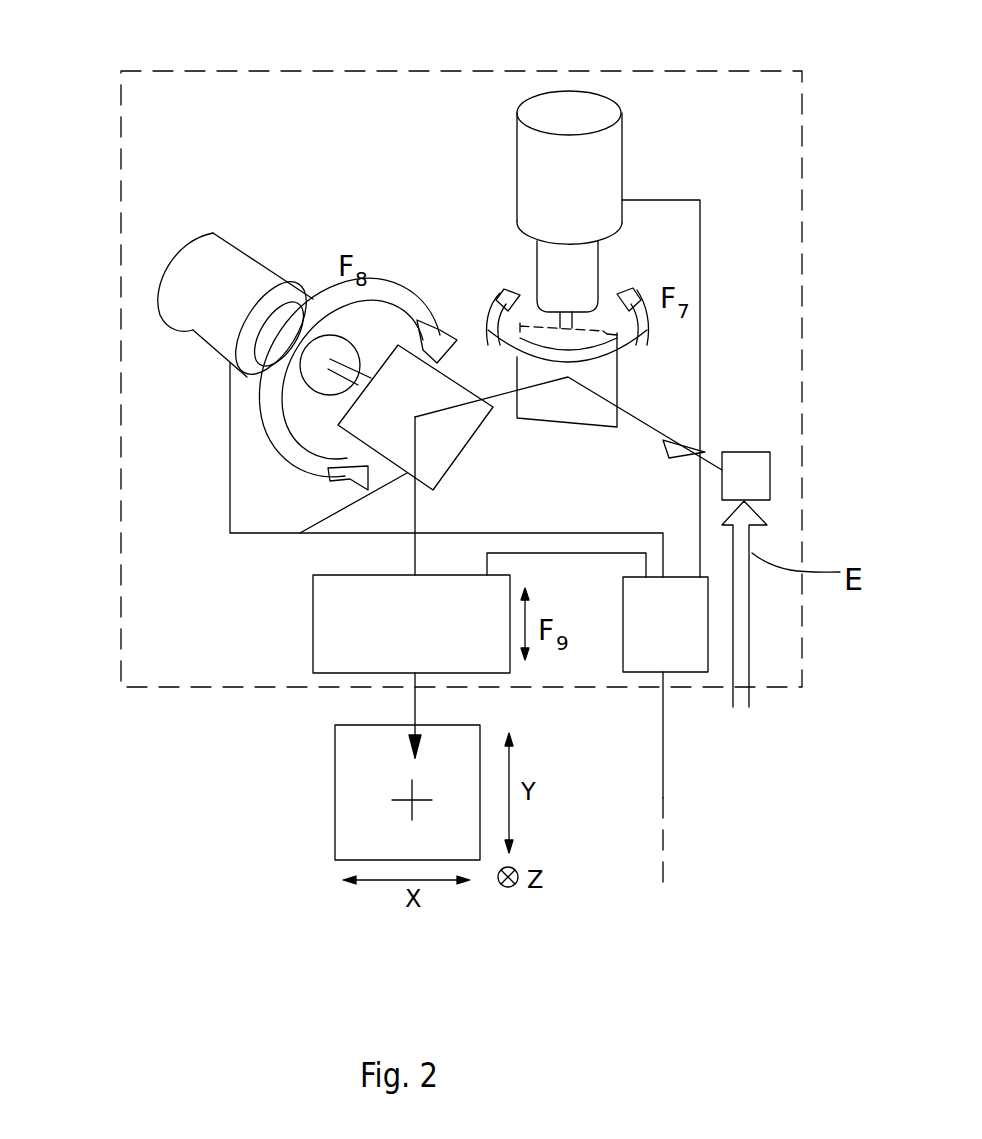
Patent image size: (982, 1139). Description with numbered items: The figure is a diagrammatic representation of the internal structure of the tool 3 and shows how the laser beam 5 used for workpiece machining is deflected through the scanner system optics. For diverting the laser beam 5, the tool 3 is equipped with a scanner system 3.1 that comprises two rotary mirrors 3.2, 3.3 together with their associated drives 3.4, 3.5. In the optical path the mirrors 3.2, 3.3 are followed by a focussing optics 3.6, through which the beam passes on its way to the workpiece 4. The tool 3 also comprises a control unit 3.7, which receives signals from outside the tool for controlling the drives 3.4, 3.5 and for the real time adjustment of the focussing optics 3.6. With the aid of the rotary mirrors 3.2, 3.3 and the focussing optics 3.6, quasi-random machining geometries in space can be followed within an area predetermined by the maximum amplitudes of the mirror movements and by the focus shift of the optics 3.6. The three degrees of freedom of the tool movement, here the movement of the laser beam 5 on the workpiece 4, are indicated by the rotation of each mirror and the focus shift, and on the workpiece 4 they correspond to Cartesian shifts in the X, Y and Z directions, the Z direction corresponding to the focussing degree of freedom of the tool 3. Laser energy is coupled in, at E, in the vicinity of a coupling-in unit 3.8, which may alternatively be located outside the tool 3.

The tool 3 is at (768, 695).
The scanner system 3.1 is at (427, 197).
The mirror 3.2 is at (617, 387).
The mirror 3.3 is at (230, 533).
The drive 3.4 is at (623, 172).
The drive 3.5 is at (205, 340).
The focussing optics 3.6 is at (312, 628).
The control unit 3.7 is at (645, 672).
The coupling-in unit 3.8 is at (770, 466).
The workpiece 4 is at (332, 808).
The laser beam 5 is at (410, 707).